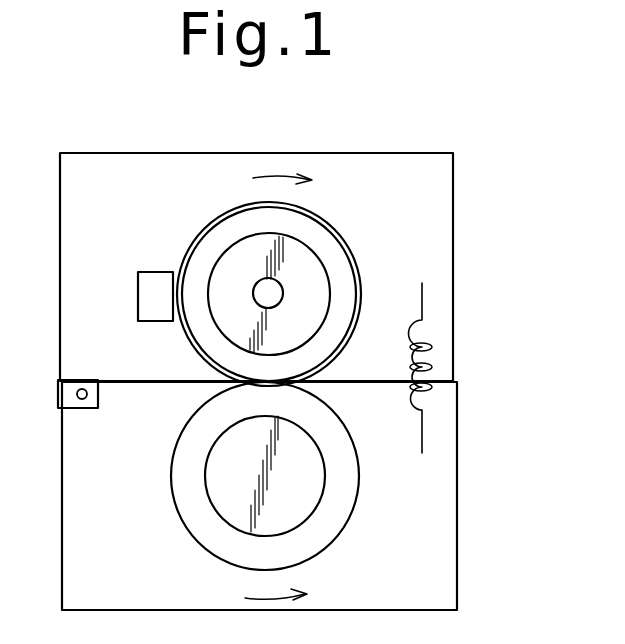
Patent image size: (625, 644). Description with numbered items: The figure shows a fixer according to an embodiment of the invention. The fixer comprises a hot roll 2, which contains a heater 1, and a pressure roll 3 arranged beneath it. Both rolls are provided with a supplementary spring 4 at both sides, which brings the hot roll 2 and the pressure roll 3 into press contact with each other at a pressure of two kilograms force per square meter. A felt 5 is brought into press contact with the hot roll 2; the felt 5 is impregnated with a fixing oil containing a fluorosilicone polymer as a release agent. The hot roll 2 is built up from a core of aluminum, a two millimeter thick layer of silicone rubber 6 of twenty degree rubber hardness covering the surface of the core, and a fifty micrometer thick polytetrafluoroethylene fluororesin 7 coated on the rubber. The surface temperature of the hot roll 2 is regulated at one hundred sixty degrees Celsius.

The heater 1 is at (284, 291).
The hot roll 2 is at (343, 230).
The pressure roll 3 is at (360, 486).
The supplementary spring 4 is at (424, 301).
The felt 5 is at (155, 283).
The silicone rubber 6 is at (345, 287).
The polytetrafluoroethylene fluororesin 7 is at (340, 229).